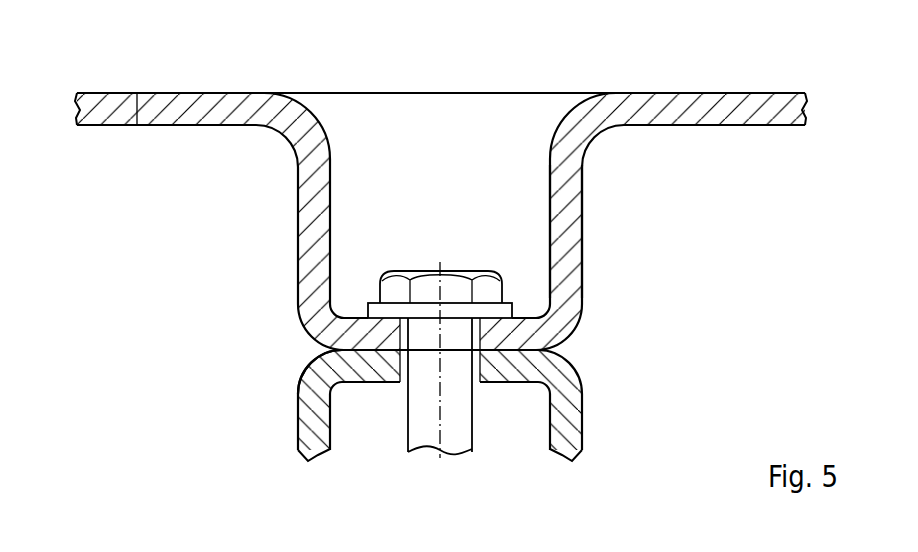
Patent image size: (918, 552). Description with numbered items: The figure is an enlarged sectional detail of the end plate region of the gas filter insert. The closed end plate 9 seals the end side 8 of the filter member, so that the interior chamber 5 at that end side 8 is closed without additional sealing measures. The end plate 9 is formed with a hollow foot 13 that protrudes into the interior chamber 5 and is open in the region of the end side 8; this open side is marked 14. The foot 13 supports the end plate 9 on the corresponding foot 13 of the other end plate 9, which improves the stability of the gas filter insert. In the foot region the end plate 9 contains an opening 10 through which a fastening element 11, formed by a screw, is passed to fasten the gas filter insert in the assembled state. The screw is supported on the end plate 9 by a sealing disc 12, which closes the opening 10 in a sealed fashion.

The interior chamber 5 is at (228, 204).
The end side 8 is at (137, 95).
The end plate 9 is at (209, 108).
The opening 10 is at (478, 372).
The fastening element 11 is at (418, 418).
The sealing disc 12 is at (513, 305).
The hollow foot 13 is at (571, 238).
The open side 14 is at (467, 130).